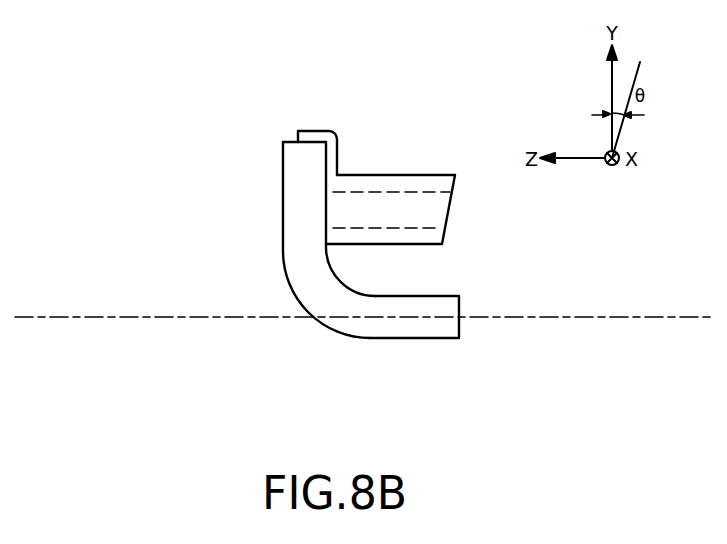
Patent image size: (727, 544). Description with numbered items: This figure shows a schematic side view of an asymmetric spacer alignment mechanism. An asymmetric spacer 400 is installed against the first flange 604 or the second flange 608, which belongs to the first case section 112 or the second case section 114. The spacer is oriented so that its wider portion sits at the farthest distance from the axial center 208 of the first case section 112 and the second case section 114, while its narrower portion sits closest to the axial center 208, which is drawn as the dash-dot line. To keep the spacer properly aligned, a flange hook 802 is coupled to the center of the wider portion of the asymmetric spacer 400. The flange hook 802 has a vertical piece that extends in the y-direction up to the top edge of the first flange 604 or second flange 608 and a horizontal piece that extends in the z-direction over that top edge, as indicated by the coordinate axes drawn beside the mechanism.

The axial center 208 is at (57, 318).
The first flange 604 is at (256, 240).
The second flange 608 is at (293, 186).
The first case section 112 is at (484, 321).
The second case section 114 is at (442, 331).
The flange hook 802 is at (306, 134).
The asymmetric spacer 400 is at (413, 204).